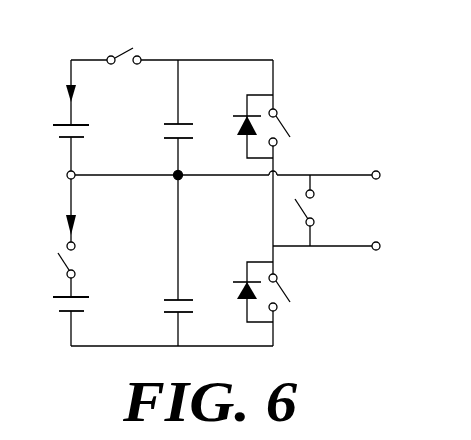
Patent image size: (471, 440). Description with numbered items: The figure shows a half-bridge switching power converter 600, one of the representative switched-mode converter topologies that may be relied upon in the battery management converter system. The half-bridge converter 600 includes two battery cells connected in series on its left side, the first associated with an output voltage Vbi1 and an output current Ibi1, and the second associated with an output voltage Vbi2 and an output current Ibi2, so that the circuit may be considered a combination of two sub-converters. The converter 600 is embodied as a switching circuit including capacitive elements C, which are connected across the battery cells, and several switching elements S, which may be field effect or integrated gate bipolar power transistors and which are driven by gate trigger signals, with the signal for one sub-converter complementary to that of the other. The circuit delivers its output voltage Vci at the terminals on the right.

The half-bridge switching power converter 600 is at (46, 52).
The switching elements S is at (194, 172).
The capacitive elements C is at (182, 207).
The output current of first battery cell Ibi1 is at (90, 96).
The output current of second battery cell Ibi2 is at (90, 227).
The output voltage of first battery cell Vbi1 is at (90, 134).
The output voltage of second battery cell Vbi2 is at (90, 307).
The output voltage of battery cell converter Vci is at (351, 210).